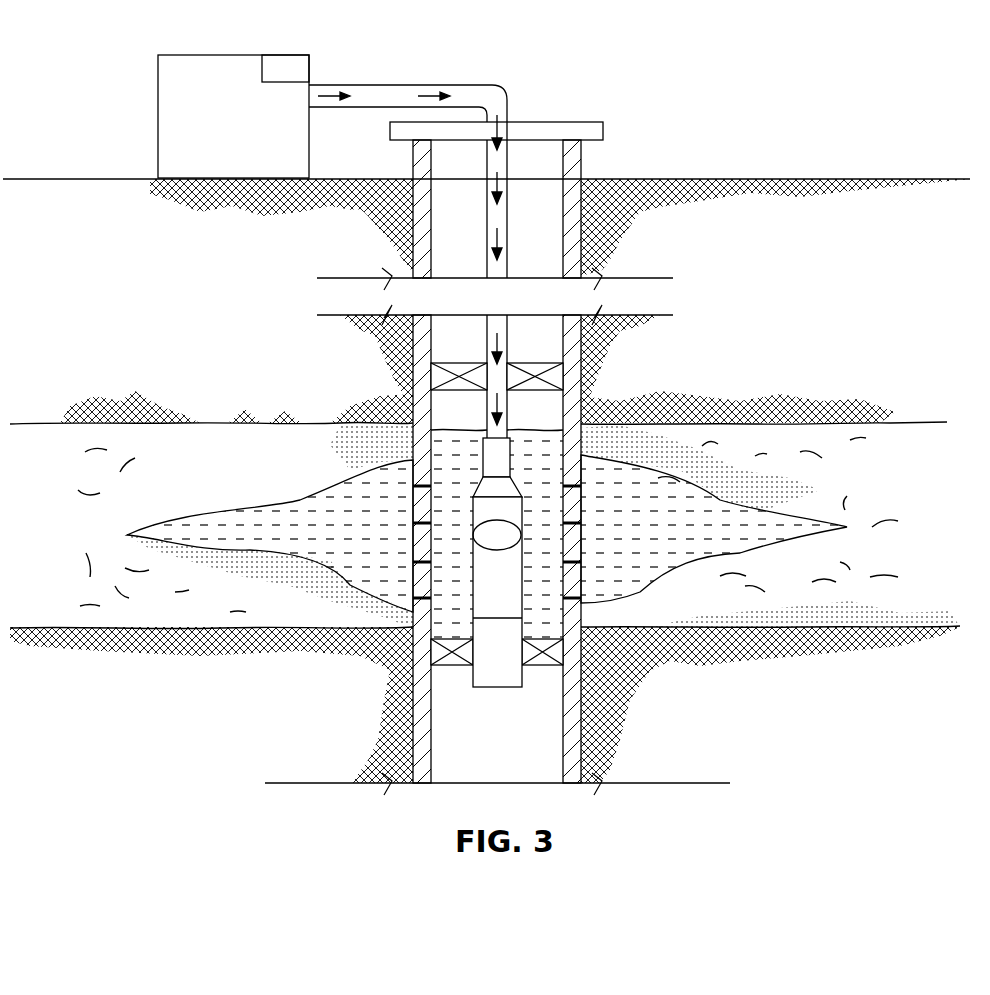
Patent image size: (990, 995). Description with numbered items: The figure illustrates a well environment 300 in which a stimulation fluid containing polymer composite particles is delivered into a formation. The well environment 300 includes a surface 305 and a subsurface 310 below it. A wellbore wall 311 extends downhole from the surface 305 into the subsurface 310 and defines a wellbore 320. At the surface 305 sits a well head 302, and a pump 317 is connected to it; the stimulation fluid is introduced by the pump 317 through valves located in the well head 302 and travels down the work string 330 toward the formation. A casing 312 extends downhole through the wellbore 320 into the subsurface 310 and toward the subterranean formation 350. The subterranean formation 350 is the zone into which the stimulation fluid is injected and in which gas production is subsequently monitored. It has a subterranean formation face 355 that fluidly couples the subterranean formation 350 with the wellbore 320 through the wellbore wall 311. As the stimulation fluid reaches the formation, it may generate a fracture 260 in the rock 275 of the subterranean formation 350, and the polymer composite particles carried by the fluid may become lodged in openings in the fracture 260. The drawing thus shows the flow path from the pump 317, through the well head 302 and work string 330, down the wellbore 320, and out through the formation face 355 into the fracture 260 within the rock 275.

The well environment 300 is at (402, 420).
The well head 302 is at (540, 122).
The surface 305 is at (632, 178).
The subsurface 310 is at (203, 330).
The wellbore wall 311 is at (422, 342).
The casing 312 is at (412, 268).
The pump 317 is at (158, 118).
The wellbore 320 is at (558, 228).
The work string 330 is at (508, 345).
The subterranean formation 350 is at (933, 488).
The subterranean formation face 355 is at (680, 455).
The fracture 260 is at (507, 482).
The rock 275 is at (195, 510).